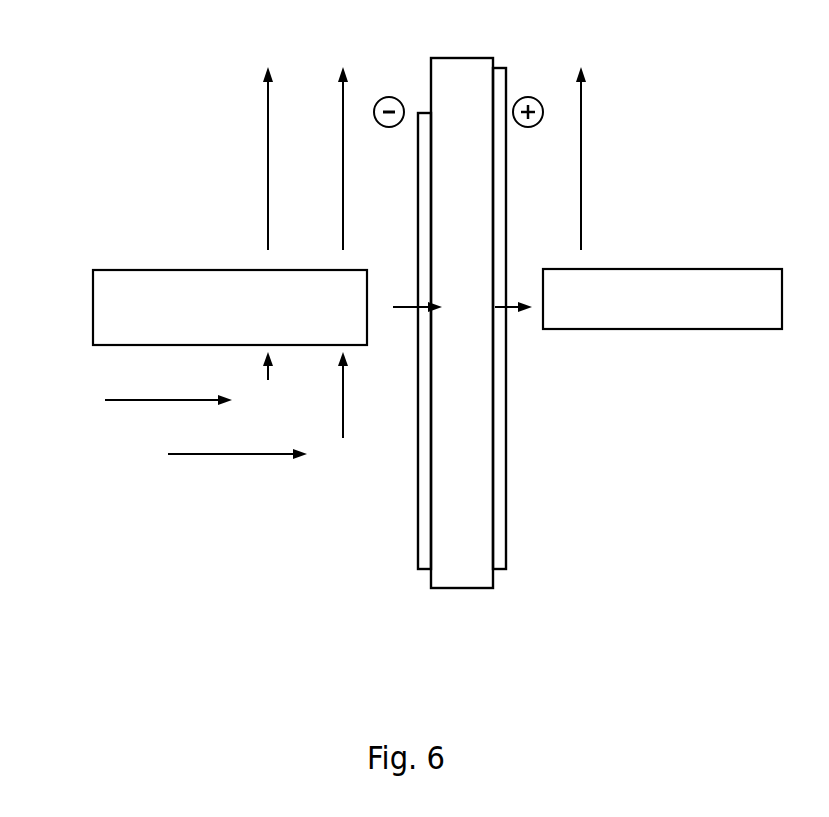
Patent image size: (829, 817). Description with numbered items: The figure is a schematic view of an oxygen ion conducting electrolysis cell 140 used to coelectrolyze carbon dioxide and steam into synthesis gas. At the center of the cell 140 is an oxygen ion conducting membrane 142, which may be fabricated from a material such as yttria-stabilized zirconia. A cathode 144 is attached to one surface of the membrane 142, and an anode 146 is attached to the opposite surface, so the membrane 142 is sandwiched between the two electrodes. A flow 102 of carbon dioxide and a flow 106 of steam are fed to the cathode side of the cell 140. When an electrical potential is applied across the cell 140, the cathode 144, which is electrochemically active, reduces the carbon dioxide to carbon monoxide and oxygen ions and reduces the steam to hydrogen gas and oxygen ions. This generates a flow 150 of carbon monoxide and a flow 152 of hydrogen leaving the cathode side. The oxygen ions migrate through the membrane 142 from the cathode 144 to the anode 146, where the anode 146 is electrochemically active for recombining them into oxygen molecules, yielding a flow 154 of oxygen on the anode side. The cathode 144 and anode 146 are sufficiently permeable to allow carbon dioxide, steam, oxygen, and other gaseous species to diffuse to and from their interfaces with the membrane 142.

The oxygen ion conducting electrolysis cell 140 is at (123, 153).
The oxygen ion conducting membrane 142 is at (455, 582).
The cathode 144 is at (417, 532).
The anode 146 is at (507, 532).
The flow of carbon monoxide 150 is at (343, 232).
The flow of hydrogen 152 is at (267, 202).
The flow of oxygen 154 is at (581, 162).
The flow of steam 106 is at (160, 400).
The flow of carbon dioxide 102 is at (215, 454).